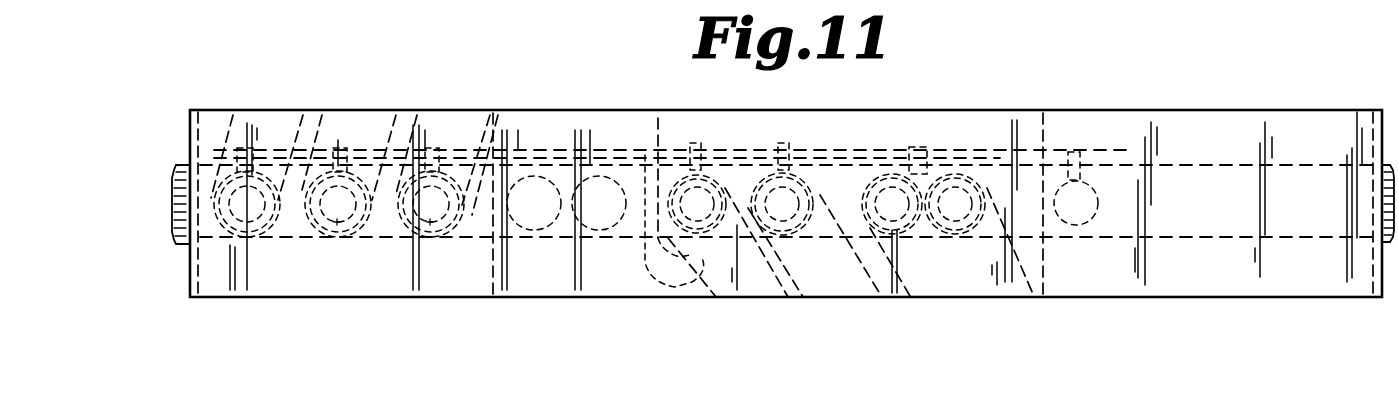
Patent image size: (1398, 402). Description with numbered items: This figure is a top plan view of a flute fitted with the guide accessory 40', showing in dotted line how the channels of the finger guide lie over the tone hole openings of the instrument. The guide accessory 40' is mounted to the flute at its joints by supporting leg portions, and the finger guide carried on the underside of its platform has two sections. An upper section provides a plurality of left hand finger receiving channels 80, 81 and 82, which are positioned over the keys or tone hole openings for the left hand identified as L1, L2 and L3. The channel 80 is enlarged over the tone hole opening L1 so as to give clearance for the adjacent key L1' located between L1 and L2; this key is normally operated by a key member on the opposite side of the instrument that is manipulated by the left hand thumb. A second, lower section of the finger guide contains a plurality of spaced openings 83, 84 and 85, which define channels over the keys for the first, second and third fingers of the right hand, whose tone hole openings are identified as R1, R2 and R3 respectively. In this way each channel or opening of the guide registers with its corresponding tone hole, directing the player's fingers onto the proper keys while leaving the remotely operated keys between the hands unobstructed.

The guide accessory 40' is at (783, 227).
The tone hole opening for first finger of right hand R1 is at (420, 245).
The tone hole opening for second finger of right hand R2 is at (316, 248).
The tone hole opening for third finger of right hand R3 is at (247, 243).
The tone hole opening for left hand L1 is at (955, 172).
The adjacent key between L-1 and L-2 (L-T) L1' is at (894, 172).
The tone hole opening for left hand L2 is at (797, 160).
The tone hole opening for left hand L3 is at (700, 183).
The left hand finger receiving channel 80 is at (937, 280).
The left hand finger receiving channel 81 is at (840, 297).
The left hand finger receiving channel 82 is at (732, 297).
The spaced opening for right hand first finger 83 is at (466, 116).
The spaced opening for right hand second finger 84 is at (383, 83).
The spaced opening for right hand third finger 85 is at (294, 82).